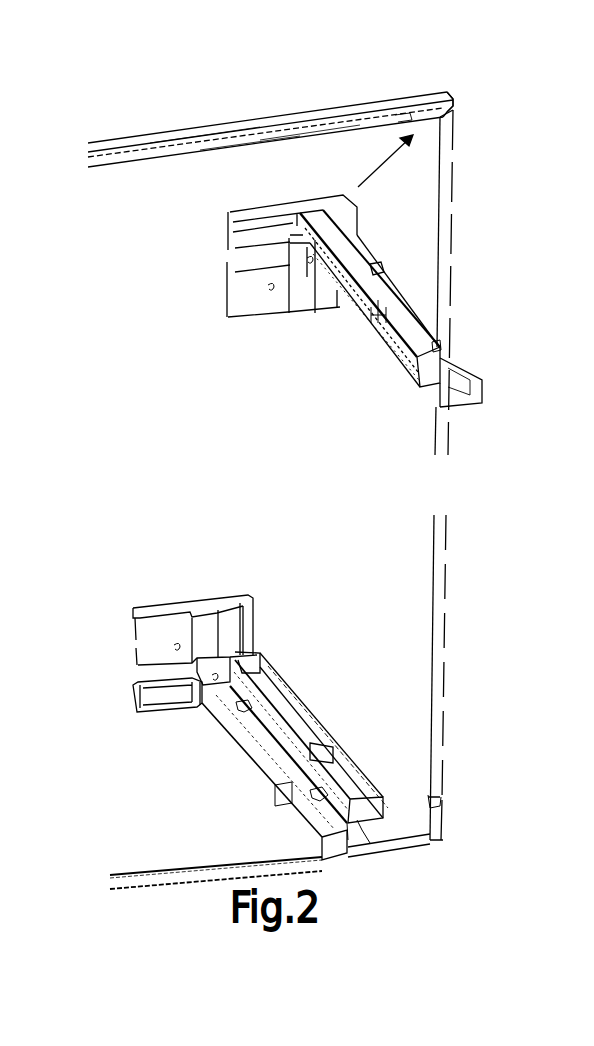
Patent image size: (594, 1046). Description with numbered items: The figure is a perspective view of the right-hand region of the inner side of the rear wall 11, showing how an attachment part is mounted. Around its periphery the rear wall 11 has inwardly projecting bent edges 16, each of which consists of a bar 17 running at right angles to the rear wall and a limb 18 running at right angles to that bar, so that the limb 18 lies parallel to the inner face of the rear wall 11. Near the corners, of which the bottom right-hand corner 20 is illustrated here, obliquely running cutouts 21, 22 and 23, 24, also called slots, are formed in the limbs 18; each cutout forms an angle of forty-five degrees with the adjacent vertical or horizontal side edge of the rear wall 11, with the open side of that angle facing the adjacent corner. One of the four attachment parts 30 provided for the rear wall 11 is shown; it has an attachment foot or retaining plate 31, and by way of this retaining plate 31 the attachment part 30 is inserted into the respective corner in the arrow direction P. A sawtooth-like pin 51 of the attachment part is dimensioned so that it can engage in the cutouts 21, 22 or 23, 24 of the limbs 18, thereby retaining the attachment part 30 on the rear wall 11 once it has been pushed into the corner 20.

The rear wall 11 is at (153, 192).
The bent edges 16 is at (253, 132).
The bar 17 is at (208, 130).
The limb 18 is at (312, 128).
The bottom right-hand corner 20 is at (450, 843).
The cutout 21 is at (443, 150).
The cutout 22 is at (407, 118).
The cutout 23 is at (432, 798).
The cutout 24 is at (392, 838).
The attachment part 30 is at (380, 295).
The retaining plate 31 is at (258, 303).
The sawtooth-like pin 51 is at (458, 94).
The arrow direction P is at (387, 163).